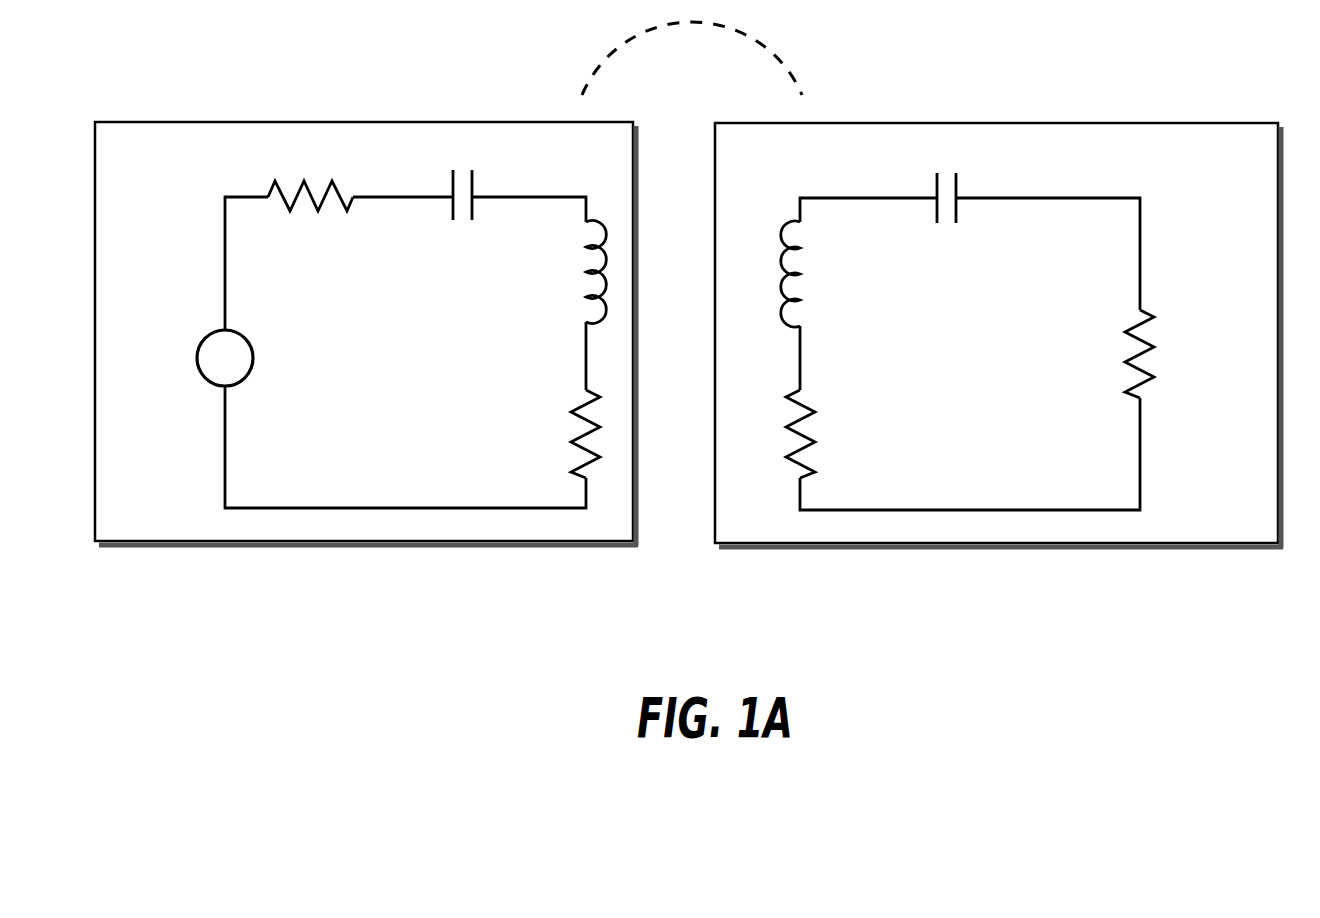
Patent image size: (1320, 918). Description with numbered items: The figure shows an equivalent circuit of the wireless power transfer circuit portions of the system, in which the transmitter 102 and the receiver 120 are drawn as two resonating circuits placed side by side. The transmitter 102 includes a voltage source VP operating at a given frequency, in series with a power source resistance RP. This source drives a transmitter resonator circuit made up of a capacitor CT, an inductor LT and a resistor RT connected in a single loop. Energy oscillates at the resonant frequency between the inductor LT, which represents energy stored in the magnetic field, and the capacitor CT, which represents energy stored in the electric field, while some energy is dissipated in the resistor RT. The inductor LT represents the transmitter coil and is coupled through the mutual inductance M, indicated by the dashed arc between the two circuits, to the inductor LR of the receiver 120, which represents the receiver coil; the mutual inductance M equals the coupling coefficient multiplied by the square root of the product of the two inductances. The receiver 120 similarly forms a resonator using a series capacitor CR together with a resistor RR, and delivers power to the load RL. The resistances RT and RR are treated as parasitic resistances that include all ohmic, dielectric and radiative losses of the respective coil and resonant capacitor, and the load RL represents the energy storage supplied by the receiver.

The transmitter 102 is at (132, 162).
The receiver 120 is at (1184, 163).
The mutual inductance M is at (692, 58).
The power source resistance RP is at (310, 171).
The capacitor CT is at (460, 179).
The inductor LT is at (570, 272).
The resistor RT is at (563, 434).
The voltage source VP is at (204, 358).
The capacitor CR is at (948, 178).
The inductor LR is at (815, 274).
The resistor RR is at (821, 434).
The load RL is at (1161, 354).